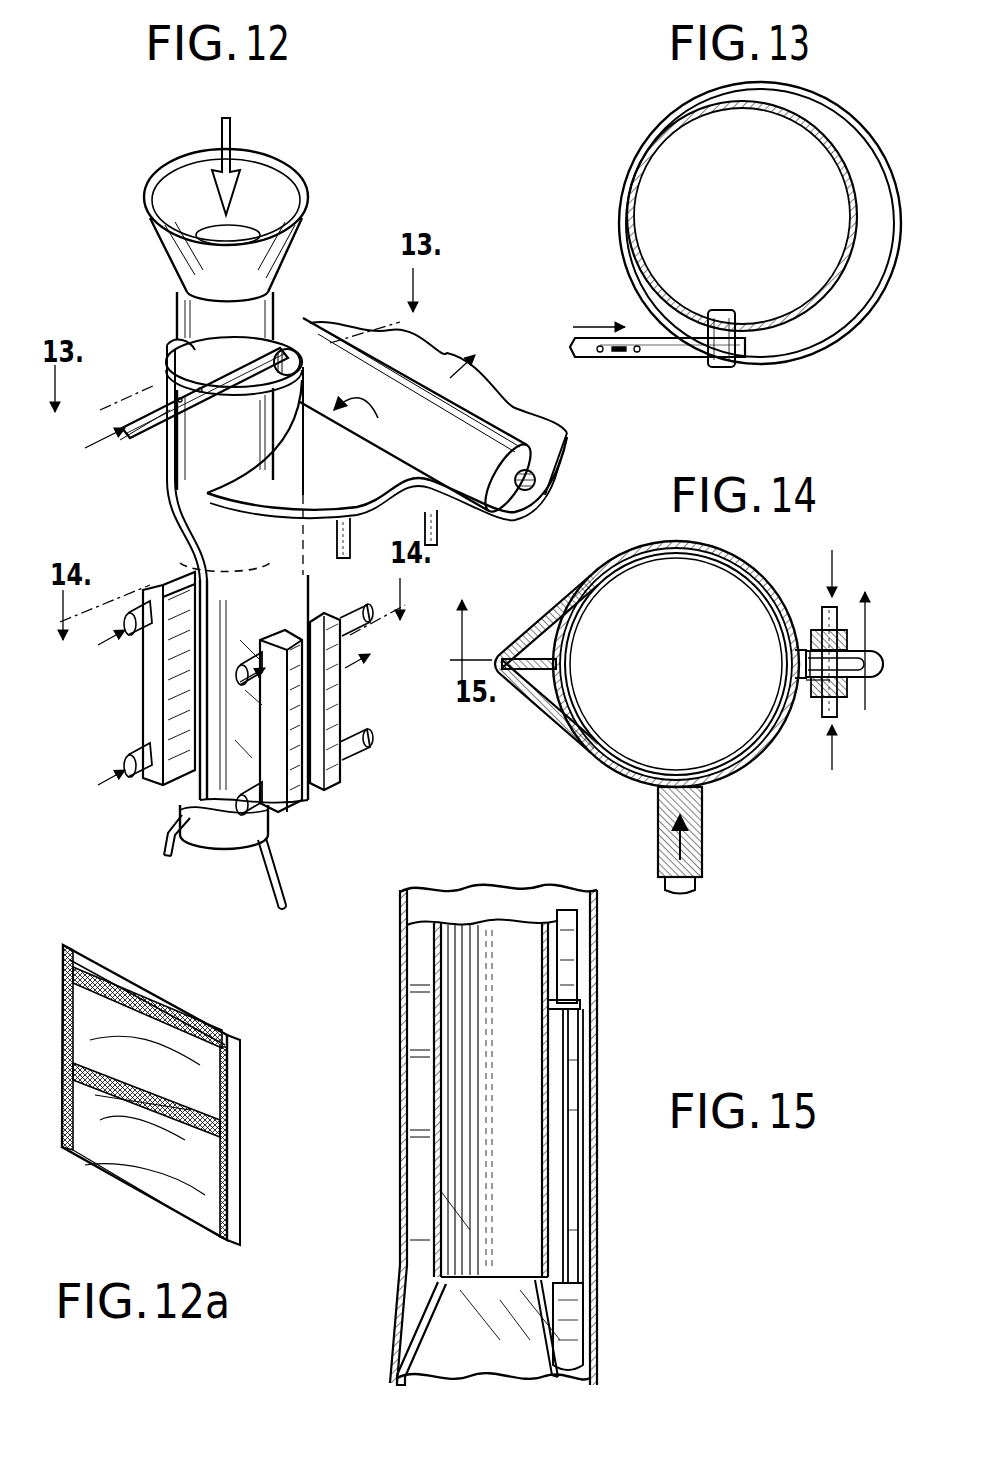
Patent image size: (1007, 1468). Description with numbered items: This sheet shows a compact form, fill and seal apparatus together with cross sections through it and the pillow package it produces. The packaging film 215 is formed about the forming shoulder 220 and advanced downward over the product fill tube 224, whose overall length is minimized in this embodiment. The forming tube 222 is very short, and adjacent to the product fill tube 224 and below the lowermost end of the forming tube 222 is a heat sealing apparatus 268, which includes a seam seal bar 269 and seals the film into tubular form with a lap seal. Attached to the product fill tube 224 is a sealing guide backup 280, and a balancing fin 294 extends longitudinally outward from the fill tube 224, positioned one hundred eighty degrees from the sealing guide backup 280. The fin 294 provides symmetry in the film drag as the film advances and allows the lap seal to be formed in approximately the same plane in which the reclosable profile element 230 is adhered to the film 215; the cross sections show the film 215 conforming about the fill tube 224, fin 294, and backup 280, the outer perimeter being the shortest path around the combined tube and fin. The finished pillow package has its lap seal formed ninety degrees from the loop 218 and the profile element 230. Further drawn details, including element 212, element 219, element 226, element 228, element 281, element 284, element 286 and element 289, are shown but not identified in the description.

In FIG. 12, the hinge pin 212 is at (525, 490).
In FIG. 12, the packaging film 215 is at (480, 410).
In FIG. 14, the packaging film 215 is at (714, 548).
In FIG. 15, the packaging film 215 is at (538, 897).
In FIG. 14, the loop 218 is at (887, 678).
In FIG. 12a, the cross bar of filter panel 219 is at (152, 1122).
In FIG. 12, the forming shoulder 220 is at (325, 200).
In FIG. 12, the forming tube 222 is at (168, 360).
In FIG. 13, the forming tube 222 is at (863, 126).
In FIG. 12, the product fill tube 224 is at (298, 292).
In FIG. 13, the product fill tube 224 is at (717, 108).
In FIG. 14, the product fill tube 224 is at (596, 590).
In FIG. 15, the product fill tube 224 is at (474, 935).
In FIG. 12, the funnel 226 is at (170, 168).
In FIG. 12, the legs 228 is at (282, 905).
In FIG. 15, the legs 228 is at (420, 1312).
In FIG. 12, the reclosable profile element 230 is at (135, 440).
In FIG. 13, the reclosable profile element 230 is at (618, 358).
In FIG. 15, the reclosable profile element 230 is at (580, 958).
In FIG. 12, the heat sealing apparatus 268 is at (130, 676).
In FIG. 14, the heat sealing apparatus 268 is at (712, 825).
In FIG. 12, the seam seal bar 269 is at (158, 585).
In FIG. 12, the sealing guide backup 280 is at (347, 650).
In FIG. 14, the sealing guide backup 280 is at (806, 663).
In FIG. 15, the sealing guide backup 280 is at (577, 1066).
In FIG. 15, the cross pin 281 is at (580, 1002).
In FIG. 12, the pin 284 is at (342, 752).
In FIG. 14, the pin 284 is at (838, 628).
In FIG. 12, the bracket arm 286 is at (302, 797).
In FIG. 14, the bracket arm 286 is at (810, 696).
In FIG. 12a, the filter panel 289 is at (62, 1000).
In FIG. 14, the balancing fin 294 is at (527, 694).
In FIG. 15, the balancing fin 294 is at (422, 1016).